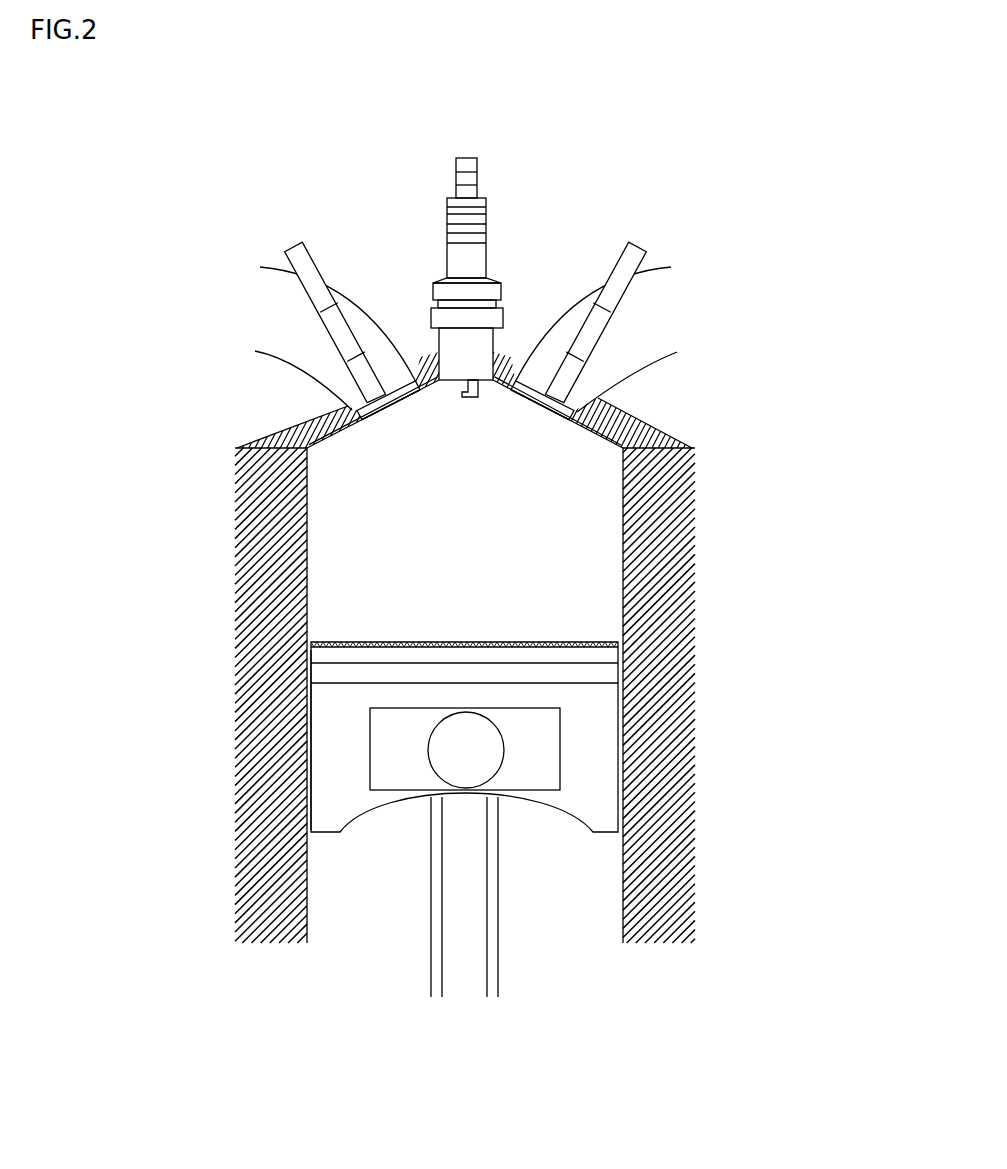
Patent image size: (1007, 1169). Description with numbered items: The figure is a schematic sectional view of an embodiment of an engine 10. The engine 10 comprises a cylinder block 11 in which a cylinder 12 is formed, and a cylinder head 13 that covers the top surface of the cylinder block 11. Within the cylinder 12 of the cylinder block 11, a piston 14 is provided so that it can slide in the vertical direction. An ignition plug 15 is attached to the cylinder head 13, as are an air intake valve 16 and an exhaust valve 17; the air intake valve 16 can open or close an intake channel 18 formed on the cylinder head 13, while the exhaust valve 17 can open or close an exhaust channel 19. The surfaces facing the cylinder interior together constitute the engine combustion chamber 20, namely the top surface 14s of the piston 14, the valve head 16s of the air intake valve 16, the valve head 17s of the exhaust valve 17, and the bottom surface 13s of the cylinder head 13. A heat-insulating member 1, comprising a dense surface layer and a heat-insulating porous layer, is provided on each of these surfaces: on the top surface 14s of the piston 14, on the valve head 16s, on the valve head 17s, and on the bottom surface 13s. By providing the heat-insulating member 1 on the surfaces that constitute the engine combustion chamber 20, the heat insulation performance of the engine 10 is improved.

The heat-insulating member 1 is at (333, 440).
The engine 10 is at (612, 145).
The cylinder block 11 is at (255, 612).
The cylinder 12 is at (307, 563).
The cylinder head 13 is at (305, 420).
The bottom surface 13s is at (302, 446).
The piston 14 is at (587, 770).
The top surface 14s is at (338, 645).
The ignition plug 15 is at (468, 293).
The air intake valve 16 is at (372, 368).
The valve head 16s is at (355, 403).
The exhaust valve 17 is at (567, 373).
The valve head 17s is at (552, 377).
The intake channel 18 is at (297, 355).
The exhaust channel 19 is at (647, 343).
The engine combustion chamber 20 is at (463, 413).